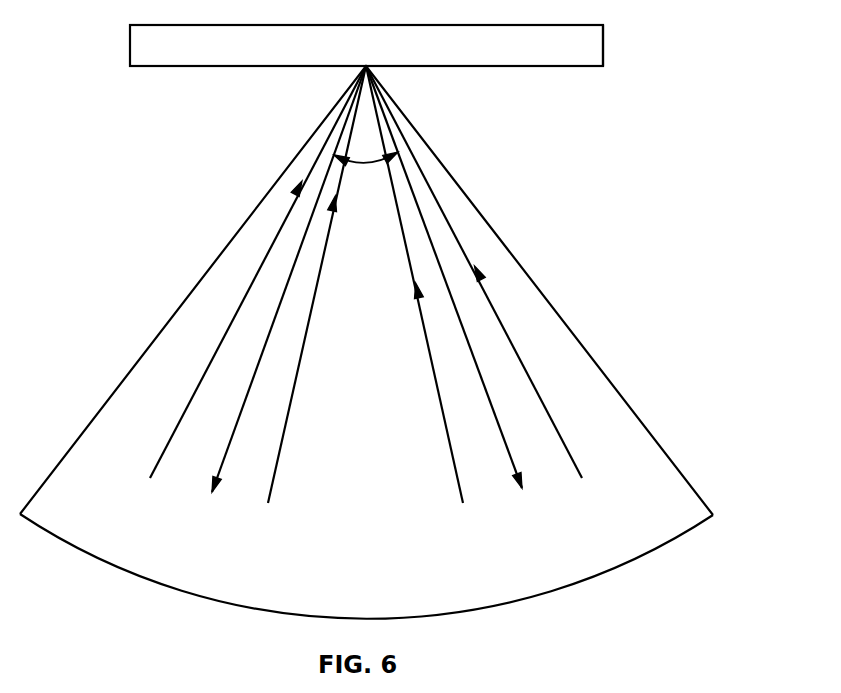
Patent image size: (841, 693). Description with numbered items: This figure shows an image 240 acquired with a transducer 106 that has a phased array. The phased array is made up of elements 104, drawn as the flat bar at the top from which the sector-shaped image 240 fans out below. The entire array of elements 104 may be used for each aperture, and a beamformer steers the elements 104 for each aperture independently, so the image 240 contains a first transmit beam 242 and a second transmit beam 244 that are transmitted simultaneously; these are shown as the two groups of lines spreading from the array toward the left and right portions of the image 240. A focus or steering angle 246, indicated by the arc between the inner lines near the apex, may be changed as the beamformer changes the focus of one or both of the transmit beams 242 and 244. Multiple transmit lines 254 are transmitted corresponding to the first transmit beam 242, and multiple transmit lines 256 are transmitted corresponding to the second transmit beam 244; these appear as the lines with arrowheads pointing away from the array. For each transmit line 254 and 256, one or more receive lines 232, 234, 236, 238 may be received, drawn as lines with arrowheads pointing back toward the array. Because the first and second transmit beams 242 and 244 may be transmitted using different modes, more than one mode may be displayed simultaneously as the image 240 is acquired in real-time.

The elements 104 is at (150, 47).
The transducer 106 is at (612, 46).
The image 240 is at (559, 286).
The first transmit beam 242 is at (196, 379).
The second transmit beam 244 is at (585, 381).
The receive line 232 is at (193, 393).
The receive line 234 is at (285, 432).
The receive line 236 is at (433, 378).
The receive line 238 is at (540, 393).
The focus or steering angle 246 is at (368, 165).
The transmit lines 254 is at (227, 445).
The transmit lines 256 is at (510, 442).